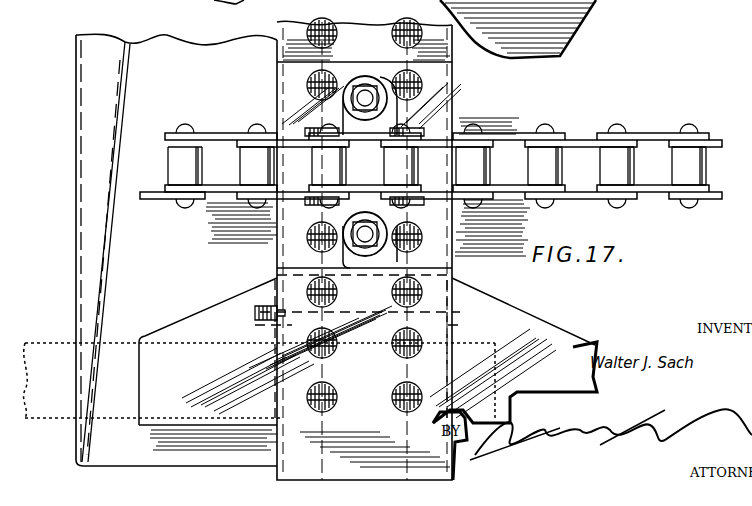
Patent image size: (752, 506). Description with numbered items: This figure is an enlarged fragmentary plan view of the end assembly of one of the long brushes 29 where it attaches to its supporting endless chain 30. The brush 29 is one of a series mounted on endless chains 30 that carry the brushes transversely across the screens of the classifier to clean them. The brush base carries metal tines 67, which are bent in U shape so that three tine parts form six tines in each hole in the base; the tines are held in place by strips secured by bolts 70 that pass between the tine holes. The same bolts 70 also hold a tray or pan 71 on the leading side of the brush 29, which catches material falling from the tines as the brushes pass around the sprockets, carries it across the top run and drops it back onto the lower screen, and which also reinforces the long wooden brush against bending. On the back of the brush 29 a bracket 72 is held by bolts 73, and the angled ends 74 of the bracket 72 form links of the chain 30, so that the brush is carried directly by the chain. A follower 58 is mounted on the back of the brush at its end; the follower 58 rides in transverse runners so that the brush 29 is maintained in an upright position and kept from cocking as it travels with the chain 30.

The brush 29 is at (293, 35).
The endless chain 30 is at (557, 135).
The follower 58 is at (488, 309).
The metal tines 67 is at (322, 88).
The bolts 70 is at (262, 312).
The tray or pan 71 is at (115, 278).
The bracket 72 is at (335, 96).
The bolts 73 is at (352, 95).
The angled ends 74 is at (372, 137).